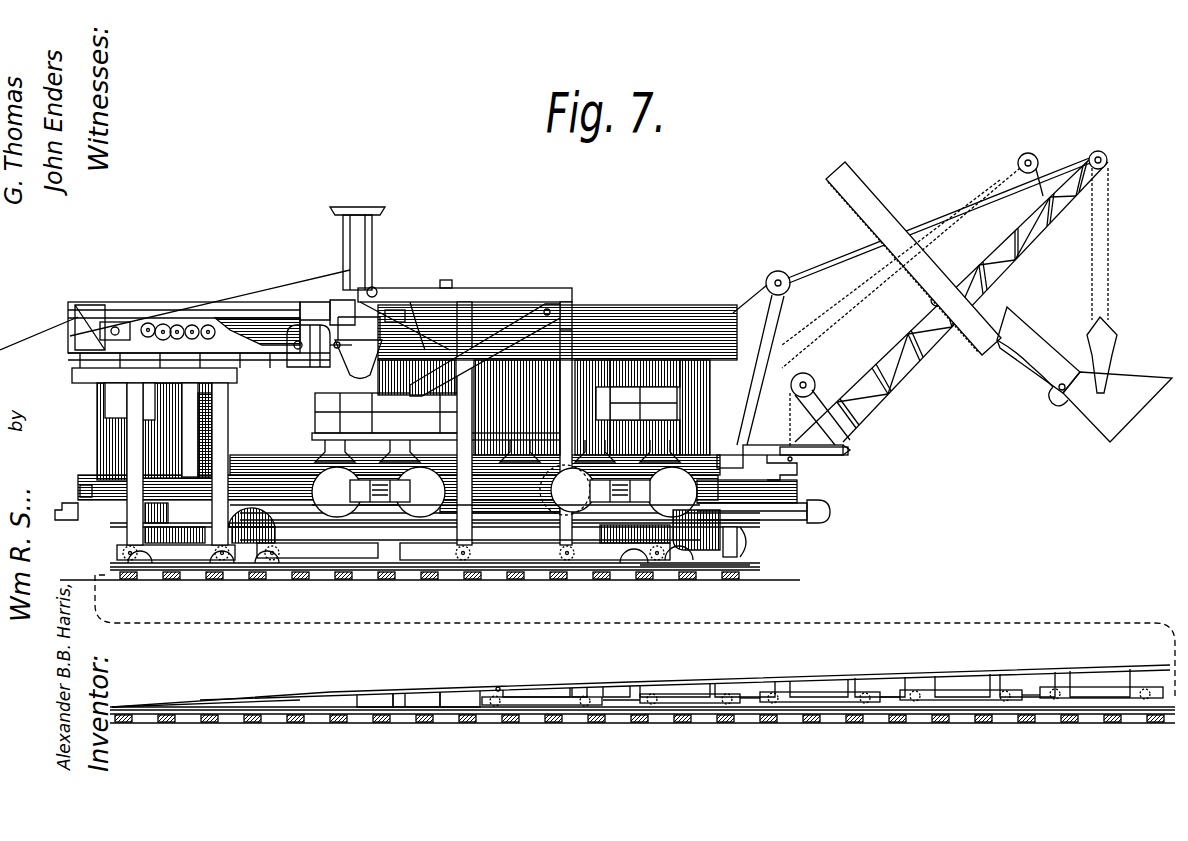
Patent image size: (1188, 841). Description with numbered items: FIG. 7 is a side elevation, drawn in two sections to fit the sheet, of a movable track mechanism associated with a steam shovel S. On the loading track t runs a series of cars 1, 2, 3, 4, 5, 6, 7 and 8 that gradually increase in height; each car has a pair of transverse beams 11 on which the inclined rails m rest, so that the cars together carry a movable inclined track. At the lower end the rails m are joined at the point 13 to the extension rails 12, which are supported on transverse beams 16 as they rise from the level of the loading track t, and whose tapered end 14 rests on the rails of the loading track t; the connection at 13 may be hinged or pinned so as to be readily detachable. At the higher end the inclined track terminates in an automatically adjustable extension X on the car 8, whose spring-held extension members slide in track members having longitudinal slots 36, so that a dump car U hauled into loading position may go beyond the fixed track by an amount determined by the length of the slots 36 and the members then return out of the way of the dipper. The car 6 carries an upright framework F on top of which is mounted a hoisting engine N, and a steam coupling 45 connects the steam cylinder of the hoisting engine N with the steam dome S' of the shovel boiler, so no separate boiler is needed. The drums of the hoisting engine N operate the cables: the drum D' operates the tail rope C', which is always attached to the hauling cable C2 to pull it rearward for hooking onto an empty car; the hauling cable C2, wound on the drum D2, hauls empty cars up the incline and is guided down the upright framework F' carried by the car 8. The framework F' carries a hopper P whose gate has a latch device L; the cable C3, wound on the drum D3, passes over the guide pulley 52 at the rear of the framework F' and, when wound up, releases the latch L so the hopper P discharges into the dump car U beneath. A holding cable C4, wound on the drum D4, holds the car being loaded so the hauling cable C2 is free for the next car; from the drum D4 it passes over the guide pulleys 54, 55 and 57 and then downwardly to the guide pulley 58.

The hoisting engine N is at (80, 312).
The tail rope C' is at (39, 329).
The steam coupling 45 is at (243, 314).
The drum D' is at (135, 305).
The drum D2 is at (163, 324).
The drum D3 is at (178, 325).
The drum D4 is at (208, 325).
The hauling cable C2 is at (302, 304).
The latch cable C3 is at (332, 306).
The holding cable C4 is at (268, 325).
The steam dome S' is at (311, 362).
The guide pulley 52 is at (376, 290).
The guide pulley 54 is at (413, 348).
The latch device L is at (427, 348).
The hopper P is at (483, 345).
The guide pulley 55 is at (546, 309).
The guide pulley 57 is at (562, 345).
The upright framework F' is at (601, 369).
The steam shovel S is at (557, 365).
The dump car U is at (678, 398).
The guide pulley 58 is at (612, 400).
The upright framework F is at (149, 456).
The car 6 is at (198, 560).
The transverse beams 11 is at (712, 690).
The inclined rails m is at (1022, 681).
The car 7 is at (330, 560).
The car 8 is at (513, 560).
The longitudinal slot 36 is at (570, 515).
The loading track t is at (640, 565).
The adjustable extension X is at (655, 520).
The tapered end 14 is at (232, 701).
The extension rails 12 is at (376, 698).
The transverse beams 16 is at (428, 697).
The point of connection 13 is at (498, 689).
The car 1 is at (540, 706).
The car 2 is at (672, 704).
The car 3 is at (845, 702).
The car 4 is at (960, 700).
The car 5 is at (1118, 698).